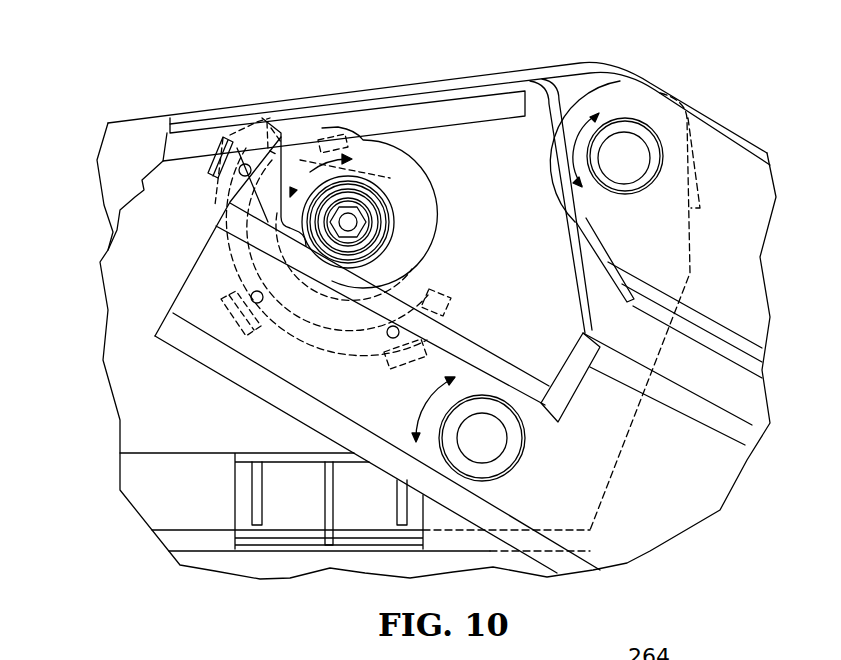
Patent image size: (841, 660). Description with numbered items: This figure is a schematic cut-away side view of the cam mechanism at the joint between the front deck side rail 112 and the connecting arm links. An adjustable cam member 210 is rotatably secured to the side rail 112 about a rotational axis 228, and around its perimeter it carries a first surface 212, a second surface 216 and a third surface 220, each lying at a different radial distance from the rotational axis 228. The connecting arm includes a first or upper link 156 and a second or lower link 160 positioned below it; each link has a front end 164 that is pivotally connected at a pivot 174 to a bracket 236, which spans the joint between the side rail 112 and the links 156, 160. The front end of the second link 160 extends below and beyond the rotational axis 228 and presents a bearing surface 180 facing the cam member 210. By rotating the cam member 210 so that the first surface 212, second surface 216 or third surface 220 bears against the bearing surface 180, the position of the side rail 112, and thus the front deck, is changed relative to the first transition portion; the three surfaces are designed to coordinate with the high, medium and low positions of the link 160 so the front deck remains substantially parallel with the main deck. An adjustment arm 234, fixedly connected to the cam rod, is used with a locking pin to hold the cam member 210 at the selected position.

The side rail 112 is at (127, 268).
The first or upper link 156 is at (722, 160).
The second or lower link 160 is at (676, 497).
The front end 164 is at (612, 110).
The pivot 174 is at (623, 166).
The bearing surface 180 is at (407, 288).
The adjustable cam member 210 is at (358, 147).
The first surface 212 is at (300, 233).
The second surface 216 is at (305, 162).
The third surface 220 is at (291, 196).
The rotational axis 228 is at (352, 222).
The adjustment arm 234 is at (257, 133).
The bracket 236 is at (128, 172).